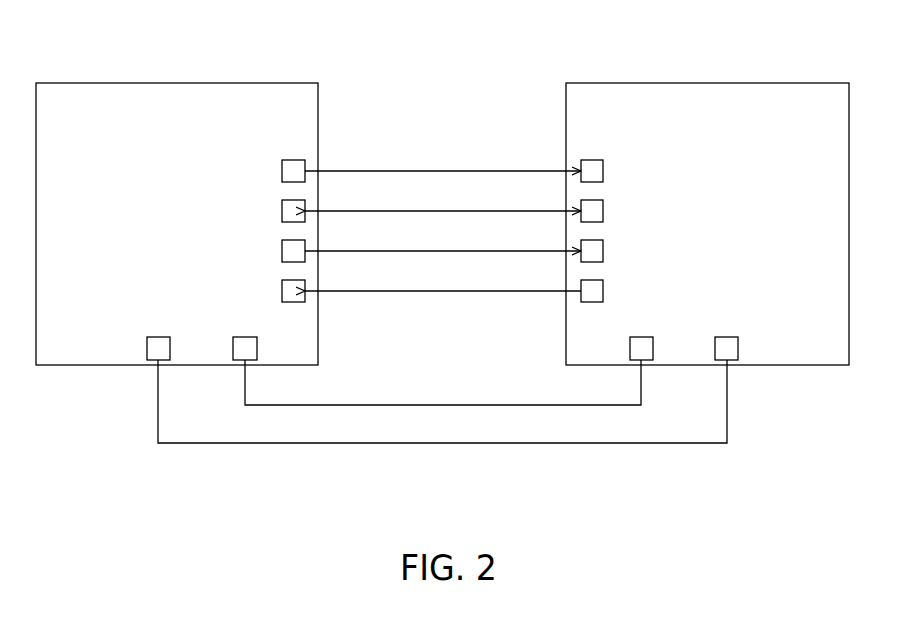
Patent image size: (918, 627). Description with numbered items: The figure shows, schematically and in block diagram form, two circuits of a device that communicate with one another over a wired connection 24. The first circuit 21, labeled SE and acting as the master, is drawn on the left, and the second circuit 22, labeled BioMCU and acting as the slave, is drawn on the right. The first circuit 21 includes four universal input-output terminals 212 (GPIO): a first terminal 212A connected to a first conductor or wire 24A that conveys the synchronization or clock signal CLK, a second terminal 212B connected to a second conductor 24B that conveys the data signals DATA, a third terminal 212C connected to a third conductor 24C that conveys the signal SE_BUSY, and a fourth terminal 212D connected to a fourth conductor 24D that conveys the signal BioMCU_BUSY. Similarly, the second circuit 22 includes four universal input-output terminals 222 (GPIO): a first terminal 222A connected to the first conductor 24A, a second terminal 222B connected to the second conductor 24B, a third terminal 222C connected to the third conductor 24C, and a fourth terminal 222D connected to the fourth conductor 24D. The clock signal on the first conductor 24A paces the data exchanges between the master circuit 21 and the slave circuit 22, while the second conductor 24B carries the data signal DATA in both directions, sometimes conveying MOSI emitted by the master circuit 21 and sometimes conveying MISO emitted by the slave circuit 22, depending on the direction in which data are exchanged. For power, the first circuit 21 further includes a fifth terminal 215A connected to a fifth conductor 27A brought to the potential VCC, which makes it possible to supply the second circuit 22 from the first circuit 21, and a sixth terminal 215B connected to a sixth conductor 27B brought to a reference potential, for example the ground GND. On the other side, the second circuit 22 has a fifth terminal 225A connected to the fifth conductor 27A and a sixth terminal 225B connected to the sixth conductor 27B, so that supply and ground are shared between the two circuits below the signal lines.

The first circuit 21 is at (118, 83).
The second circuit 22 is at (765, 83).
The input-output terminals 212 is at (288, 128).
The first terminal 212A is at (282, 171).
The second terminal 212B is at (282, 211).
The third terminal 212C is at (282, 251).
The fourth terminal 212D is at (282, 291).
The universal input-output terminals 222 is at (593, 130).
The first terminal 222A is at (604, 171).
The second terminal 222B is at (604, 211).
The third terminal 222C is at (604, 251).
The fourth terminal 222D is at (604, 291).
The wired connection 24 is at (448, 96).
The first conductor 24A is at (340, 171).
The second conductor 24B is at (340, 211).
The third conductor 24C is at (325, 251).
The fourth conductor 24D is at (325, 291).
The fifth terminal 215A is at (245, 337).
The sixth terminal 215B is at (158, 337).
The fifth terminal 225A is at (641, 337).
The sixth terminal 225B is at (727, 337).
The fifth conductor 27A is at (322, 405).
The sixth conductor 27B is at (195, 443).